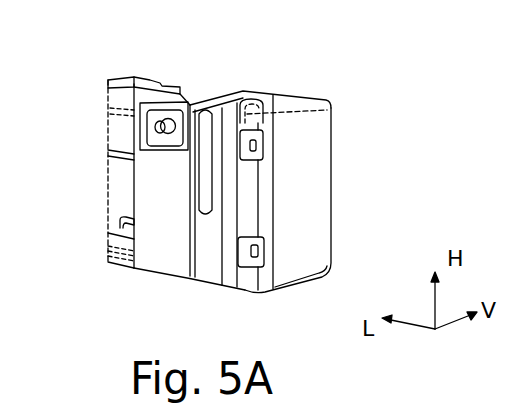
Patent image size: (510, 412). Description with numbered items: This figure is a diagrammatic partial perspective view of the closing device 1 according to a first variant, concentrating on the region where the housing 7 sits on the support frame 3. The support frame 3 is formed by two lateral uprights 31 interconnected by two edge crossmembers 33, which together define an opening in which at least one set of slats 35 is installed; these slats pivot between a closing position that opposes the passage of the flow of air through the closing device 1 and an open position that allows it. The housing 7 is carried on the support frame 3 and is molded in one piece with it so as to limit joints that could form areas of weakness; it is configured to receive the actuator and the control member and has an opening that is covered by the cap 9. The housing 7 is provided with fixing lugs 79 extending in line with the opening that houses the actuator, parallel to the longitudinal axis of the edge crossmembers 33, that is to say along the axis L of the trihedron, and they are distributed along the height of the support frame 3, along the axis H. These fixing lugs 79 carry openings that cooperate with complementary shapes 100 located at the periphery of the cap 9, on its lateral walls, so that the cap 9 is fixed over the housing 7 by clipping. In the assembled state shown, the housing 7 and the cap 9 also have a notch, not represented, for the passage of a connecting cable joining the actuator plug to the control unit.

The closing device 1 is at (413, 85).
The support frame 3 is at (142, 81).
The housing 7 is at (251, 91).
The cap 9 is at (329, 103).
The lateral uprights 31 is at (162, 250).
The edge crossmembers 33 is at (110, 80).
The set of slats 35 is at (109, 197).
The fixing lugs 79 is at (271, 100).
The complementary shapes 100 is at (253, 132).